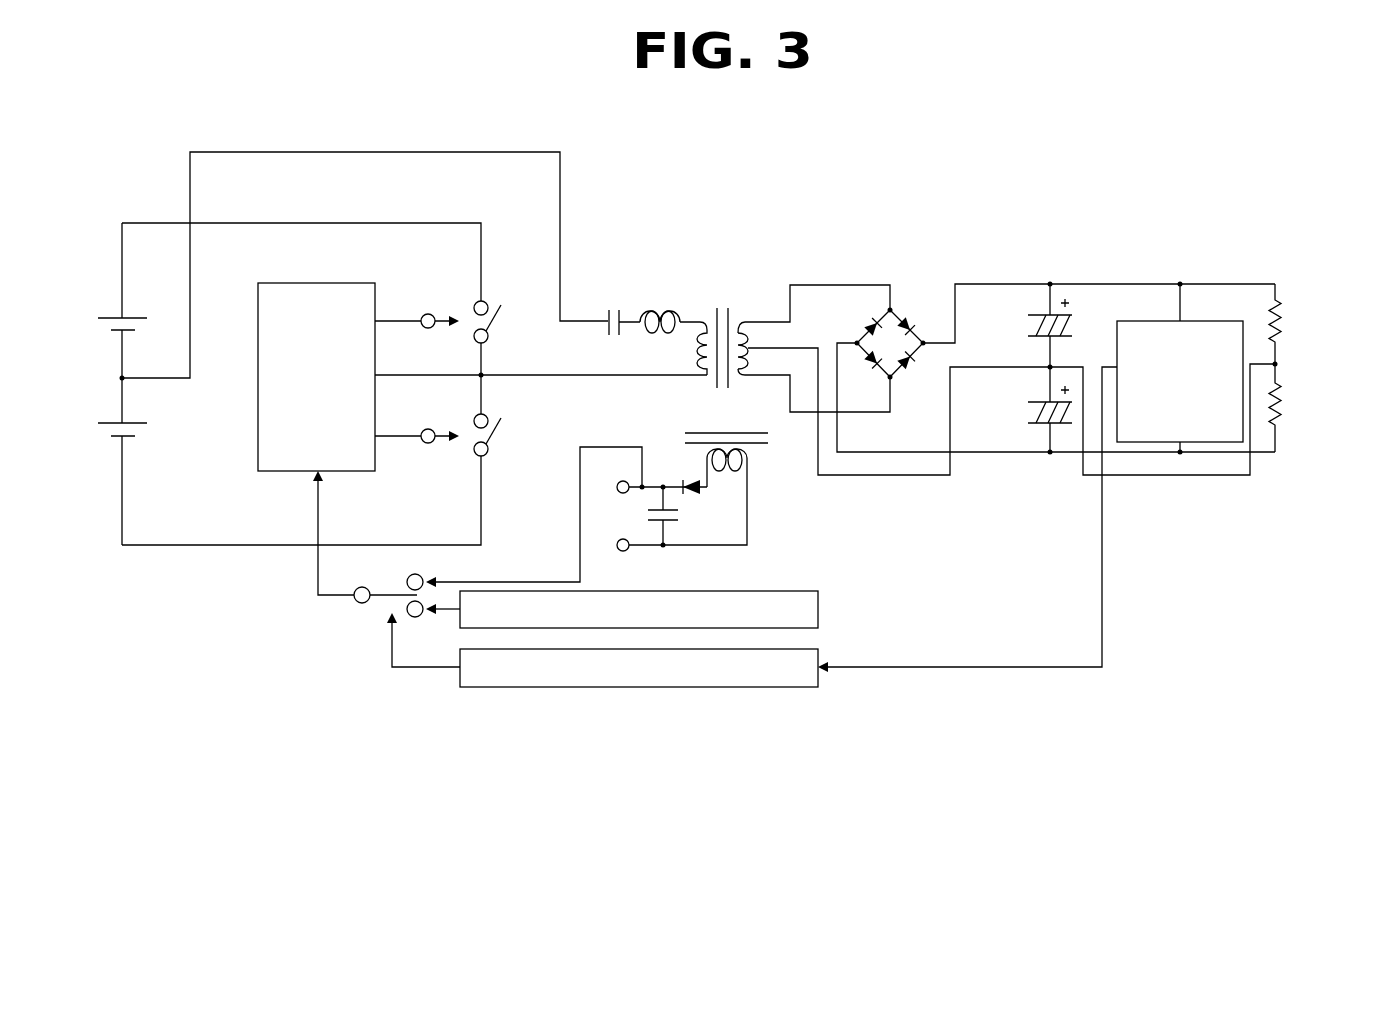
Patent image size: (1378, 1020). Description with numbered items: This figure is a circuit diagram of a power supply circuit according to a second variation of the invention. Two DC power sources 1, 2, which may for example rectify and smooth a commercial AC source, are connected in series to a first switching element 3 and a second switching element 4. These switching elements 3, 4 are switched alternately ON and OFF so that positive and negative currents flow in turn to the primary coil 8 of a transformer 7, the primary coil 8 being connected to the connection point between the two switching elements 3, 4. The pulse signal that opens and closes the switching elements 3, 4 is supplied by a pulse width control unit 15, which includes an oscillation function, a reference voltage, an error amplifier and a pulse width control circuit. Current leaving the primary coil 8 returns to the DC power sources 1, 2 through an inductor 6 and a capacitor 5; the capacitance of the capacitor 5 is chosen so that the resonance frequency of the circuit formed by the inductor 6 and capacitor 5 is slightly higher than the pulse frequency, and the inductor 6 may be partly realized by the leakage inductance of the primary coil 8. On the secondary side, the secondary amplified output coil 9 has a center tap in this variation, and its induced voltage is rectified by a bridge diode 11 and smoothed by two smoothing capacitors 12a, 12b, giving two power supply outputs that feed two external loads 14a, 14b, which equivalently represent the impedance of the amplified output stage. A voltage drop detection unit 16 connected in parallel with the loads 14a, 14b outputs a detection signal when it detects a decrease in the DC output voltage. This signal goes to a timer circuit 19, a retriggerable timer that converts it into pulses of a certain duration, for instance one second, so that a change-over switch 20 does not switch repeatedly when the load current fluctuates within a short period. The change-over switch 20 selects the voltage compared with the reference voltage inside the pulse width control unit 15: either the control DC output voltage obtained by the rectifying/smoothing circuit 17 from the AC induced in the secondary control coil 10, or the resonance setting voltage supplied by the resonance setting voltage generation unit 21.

The DC power source 1 is at (96, 326).
The DC power source 2 is at (96, 432).
The switching element 3 is at (498, 322).
The switching element 4 is at (498, 437).
The capacitor 5 is at (612, 308).
The inductor 6 is at (660, 308).
The transformer 7 is at (722, 306).
The primary coil 8 is at (685, 346).
The secondary amplified output coil 9 is at (760, 336).
The secondary control coil 10 is at (755, 466).
The bridge diode 11 is at (904, 309).
The smoothing capacitor 12a is at (1028, 322).
The smoothing capacitor 12b is at (1028, 409).
The external load 14a is at (1288, 318).
The external load 14b is at (1288, 405).
The pulse width control unit 15 is at (257, 422).
The voltage drop detection unit 16 is at (1206, 320).
The rectifying/smoothing circuit 17 is at (688, 508).
The timer circuit 19 is at (820, 685).
The change-over switch 20 is at (374, 606).
The resonance setting voltage generation unit 21 is at (820, 607).